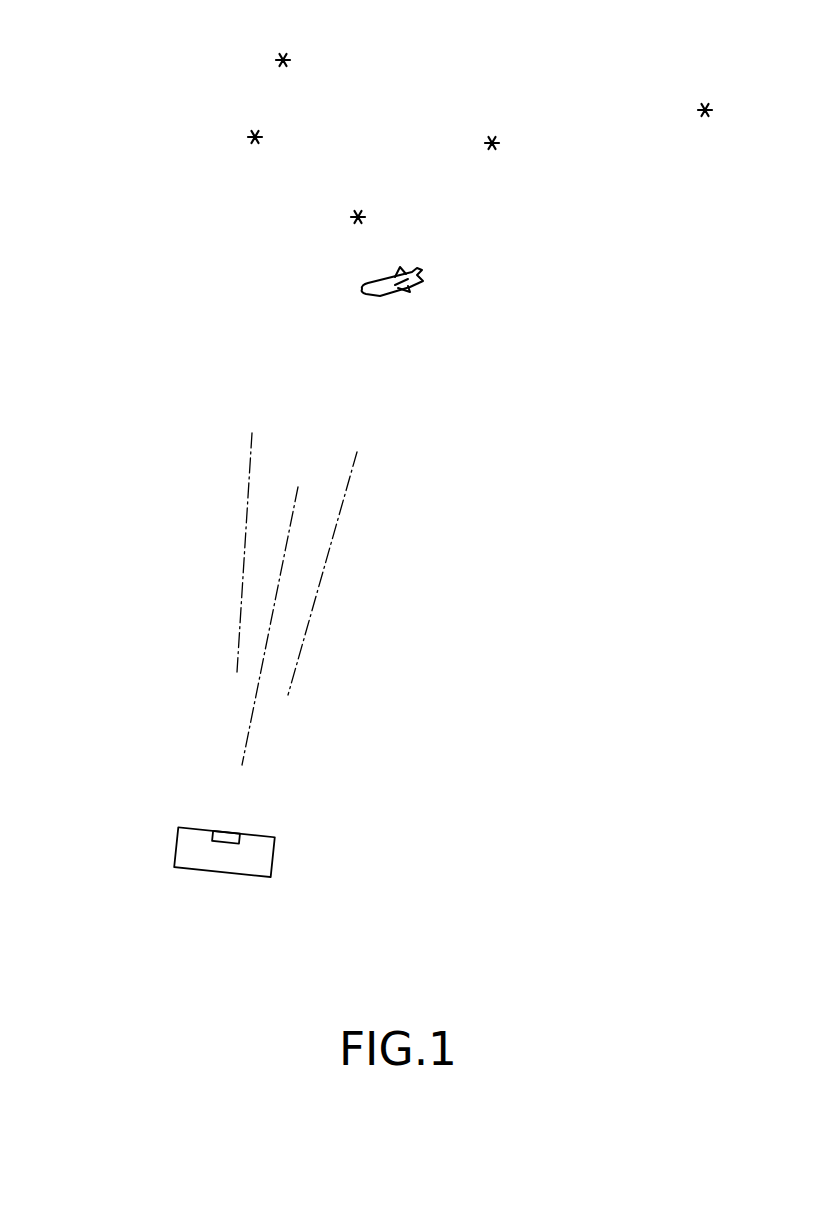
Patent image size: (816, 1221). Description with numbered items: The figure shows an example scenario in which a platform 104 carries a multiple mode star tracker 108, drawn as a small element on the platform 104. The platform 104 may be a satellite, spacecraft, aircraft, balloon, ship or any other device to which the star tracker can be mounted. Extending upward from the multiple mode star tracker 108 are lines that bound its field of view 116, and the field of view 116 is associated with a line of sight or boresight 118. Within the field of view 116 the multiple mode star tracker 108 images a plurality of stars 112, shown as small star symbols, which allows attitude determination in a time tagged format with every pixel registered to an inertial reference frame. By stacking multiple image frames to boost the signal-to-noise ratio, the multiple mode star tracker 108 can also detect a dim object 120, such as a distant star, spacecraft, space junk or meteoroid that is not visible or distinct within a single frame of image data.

The platform 104 is at (177, 850).
The multiple mode star tracker 108 is at (227, 832).
The stars 112 is at (278, 55).
The field of view 116 is at (322, 573).
The boresight 118 is at (250, 718).
The dim object 120 is at (384, 297).